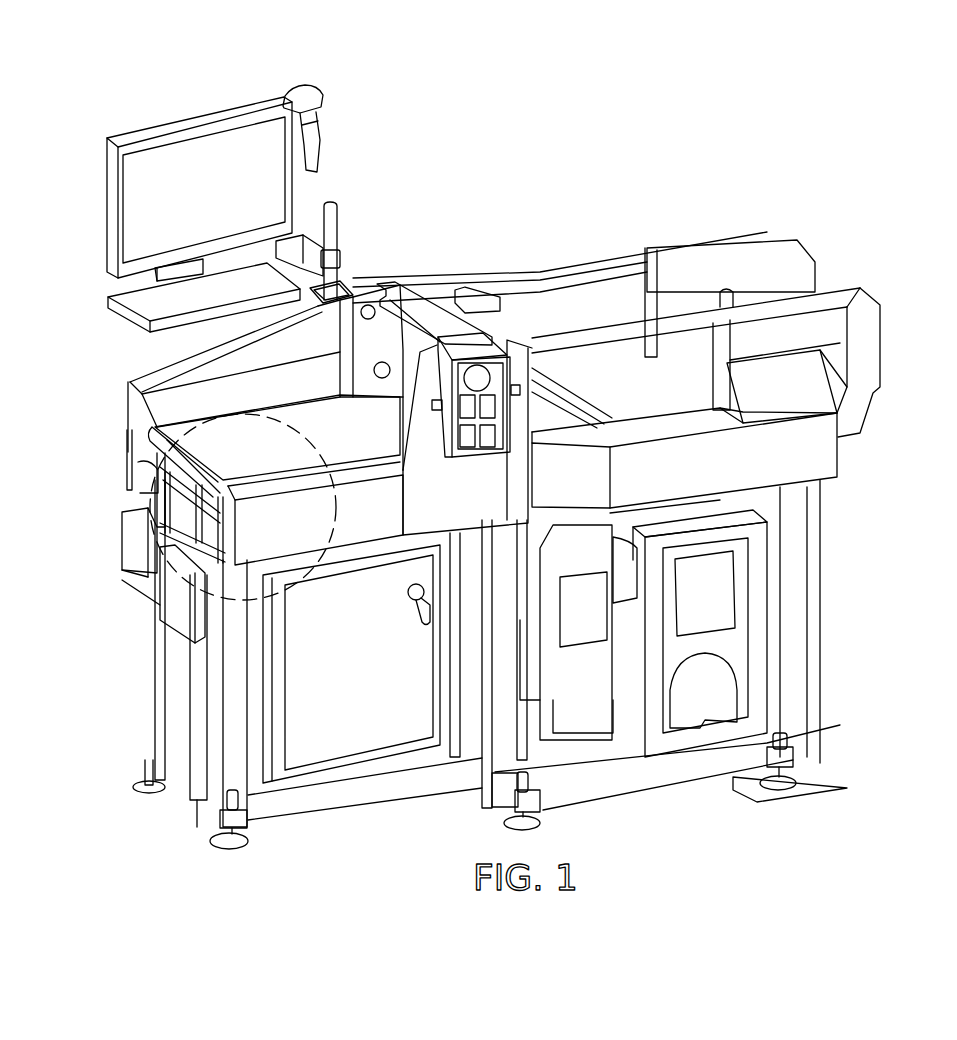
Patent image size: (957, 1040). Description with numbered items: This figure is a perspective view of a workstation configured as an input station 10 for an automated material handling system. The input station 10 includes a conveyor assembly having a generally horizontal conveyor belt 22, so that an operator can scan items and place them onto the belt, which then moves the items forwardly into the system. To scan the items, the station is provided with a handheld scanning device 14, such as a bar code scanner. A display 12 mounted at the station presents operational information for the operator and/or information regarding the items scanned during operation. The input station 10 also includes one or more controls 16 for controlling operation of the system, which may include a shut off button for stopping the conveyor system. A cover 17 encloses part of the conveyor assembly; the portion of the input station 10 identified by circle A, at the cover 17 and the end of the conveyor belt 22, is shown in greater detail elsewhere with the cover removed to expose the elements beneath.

The input station 10 is at (425, 225).
The display 12 is at (196, 118).
The handheld scanning device 14 is at (320, 91).
The controls 16 is at (478, 459).
The cover 17 is at (292, 543).
The conveyor belt 22 is at (253, 451).
The circle A is at (147, 597).